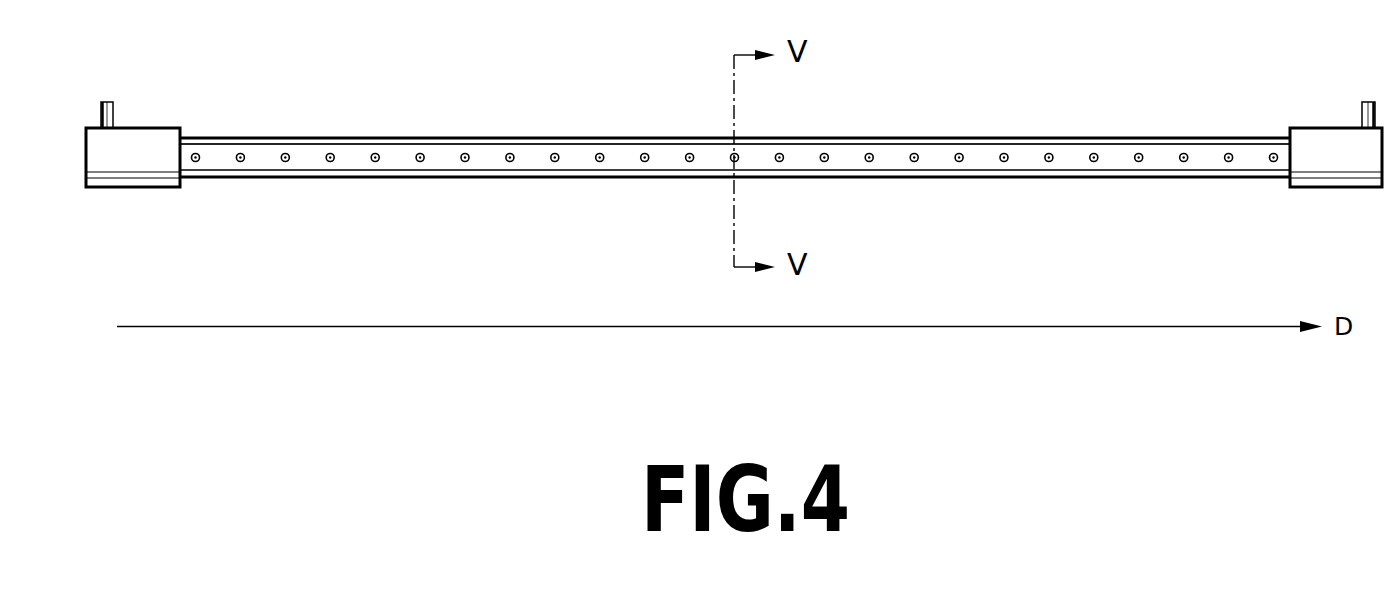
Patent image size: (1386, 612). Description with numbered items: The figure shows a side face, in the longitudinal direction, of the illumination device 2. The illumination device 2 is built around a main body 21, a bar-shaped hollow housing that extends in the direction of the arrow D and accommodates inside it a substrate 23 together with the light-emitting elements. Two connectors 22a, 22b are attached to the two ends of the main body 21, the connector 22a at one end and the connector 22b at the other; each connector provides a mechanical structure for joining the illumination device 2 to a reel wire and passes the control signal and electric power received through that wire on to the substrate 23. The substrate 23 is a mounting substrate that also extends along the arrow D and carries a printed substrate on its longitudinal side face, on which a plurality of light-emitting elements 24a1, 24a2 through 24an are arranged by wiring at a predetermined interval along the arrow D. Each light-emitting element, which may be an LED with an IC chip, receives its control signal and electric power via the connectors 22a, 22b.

The illumination device 2 is at (663, 127).
The main body 21 is at (962, 137).
The connector 22a is at (1336, 128).
The connector 22b is at (127, 128).
The substrate 23 is at (852, 150).
The light-emitting element 24a1 is at (196, 164).
The light-emitting element 24a2 is at (240, 151).
The light-emitting element 24an is at (285, 164).